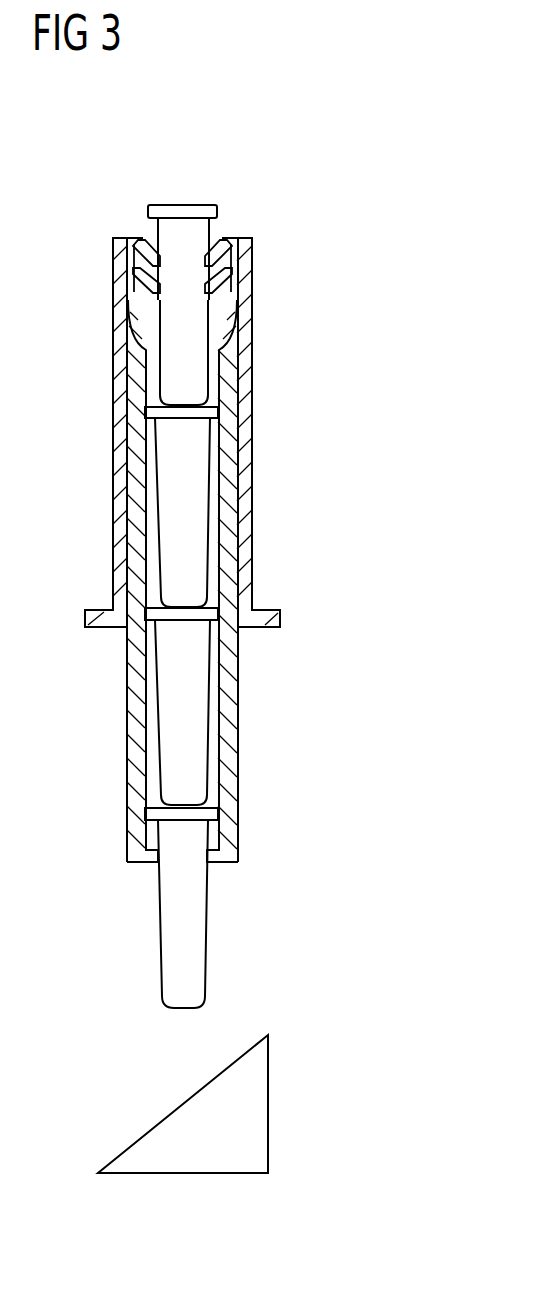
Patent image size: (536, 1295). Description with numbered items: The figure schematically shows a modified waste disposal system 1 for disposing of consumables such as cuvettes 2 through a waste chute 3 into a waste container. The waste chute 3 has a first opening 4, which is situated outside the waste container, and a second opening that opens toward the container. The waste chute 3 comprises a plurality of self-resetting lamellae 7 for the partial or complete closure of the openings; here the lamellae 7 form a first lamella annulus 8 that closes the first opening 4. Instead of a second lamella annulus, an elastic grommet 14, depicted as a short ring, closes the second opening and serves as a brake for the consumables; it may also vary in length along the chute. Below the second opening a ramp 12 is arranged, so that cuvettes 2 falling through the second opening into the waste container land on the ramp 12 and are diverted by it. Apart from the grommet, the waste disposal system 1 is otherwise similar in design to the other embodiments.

The waste disposal system 1 is at (119, 176).
The cuvettes 2 is at (193, 355).
The waste chute 3 is at (137, 387).
The first opening 4 is at (227, 224).
The self-resetting lamellae 7 is at (134, 272).
The first lamella annulus 8 is at (252, 240).
The ramp 12 is at (269, 1113).
The elastic grommet 14 is at (215, 872).